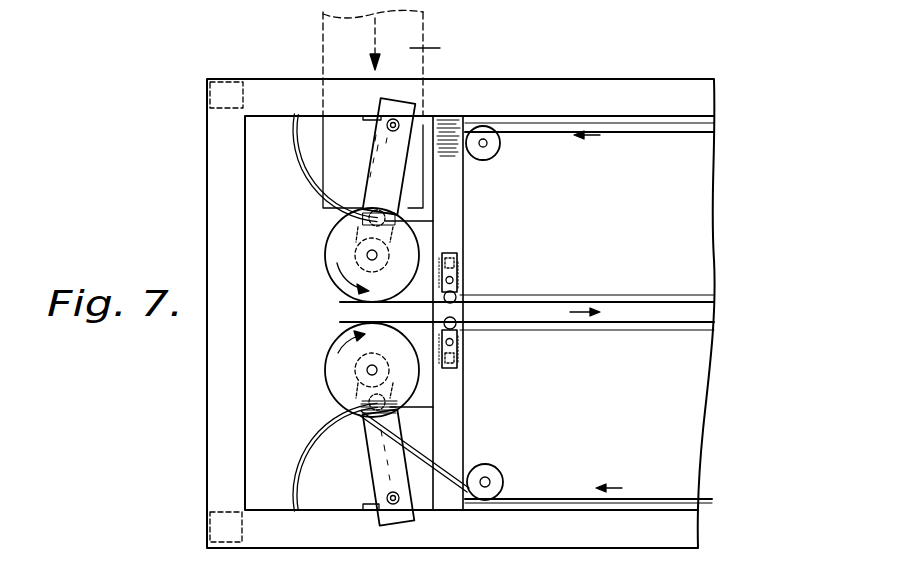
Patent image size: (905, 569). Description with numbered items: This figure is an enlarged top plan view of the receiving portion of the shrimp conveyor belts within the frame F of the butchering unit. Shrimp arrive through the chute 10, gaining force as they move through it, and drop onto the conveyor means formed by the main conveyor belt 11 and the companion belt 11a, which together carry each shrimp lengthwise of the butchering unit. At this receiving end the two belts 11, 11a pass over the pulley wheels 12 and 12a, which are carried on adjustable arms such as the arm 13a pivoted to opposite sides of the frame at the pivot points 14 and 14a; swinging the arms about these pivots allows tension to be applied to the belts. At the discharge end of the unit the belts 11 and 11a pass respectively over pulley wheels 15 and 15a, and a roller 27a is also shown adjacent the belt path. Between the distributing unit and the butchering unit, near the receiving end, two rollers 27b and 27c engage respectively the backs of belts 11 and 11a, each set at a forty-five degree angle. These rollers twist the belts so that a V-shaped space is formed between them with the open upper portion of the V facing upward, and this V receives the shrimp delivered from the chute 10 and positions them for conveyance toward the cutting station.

The frame F is at (715, 103).
The chute 10 is at (323, 58).
The main conveyor belt 11 is at (650, 133).
The conveyor belt 11a is at (714, 327).
The pulley wheel 12 is at (337, 263).
The pulley wheel 12a is at (332, 372).
The adjustable arm 13a is at (370, 433).
The pivot point 14 is at (385, 127).
The pivot point 14a is at (386, 497).
The pulley wheel 15 is at (382, 162).
The pulley wheel 15a is at (335, 457).
The idler roller 27a is at (496, 471).
The roller 27b is at (458, 290).
The roller 27c is at (458, 336).